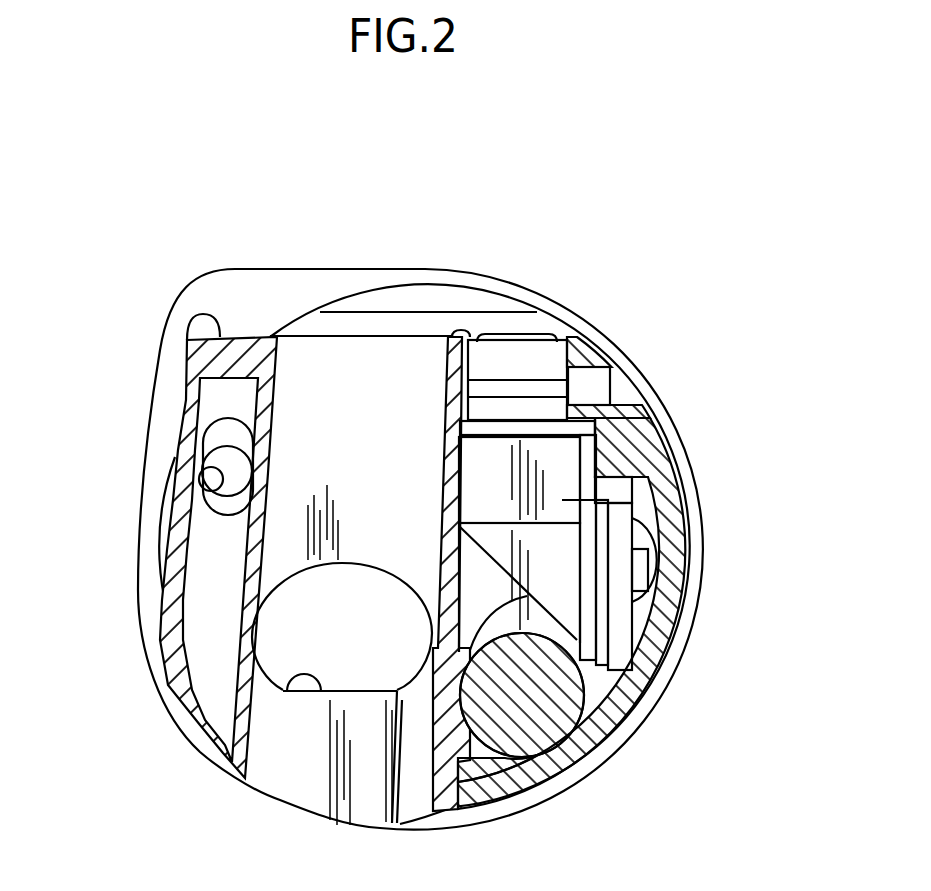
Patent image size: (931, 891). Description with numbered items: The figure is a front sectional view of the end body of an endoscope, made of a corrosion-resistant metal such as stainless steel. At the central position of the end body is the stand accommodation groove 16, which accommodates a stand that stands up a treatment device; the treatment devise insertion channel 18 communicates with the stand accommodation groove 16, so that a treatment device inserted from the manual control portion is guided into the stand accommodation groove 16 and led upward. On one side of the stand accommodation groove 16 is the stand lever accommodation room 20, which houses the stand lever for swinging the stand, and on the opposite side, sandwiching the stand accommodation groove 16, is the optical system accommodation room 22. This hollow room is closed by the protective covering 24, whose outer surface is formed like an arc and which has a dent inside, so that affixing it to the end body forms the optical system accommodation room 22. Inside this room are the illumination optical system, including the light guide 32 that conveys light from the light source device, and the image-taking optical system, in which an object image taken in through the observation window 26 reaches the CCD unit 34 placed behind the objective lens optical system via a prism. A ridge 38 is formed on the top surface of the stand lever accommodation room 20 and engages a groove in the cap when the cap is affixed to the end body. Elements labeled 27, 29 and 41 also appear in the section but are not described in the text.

The stand accommodation groove 16 is at (345, 372).
The treatment devise insertion channel 18 is at (283, 691).
The stand lever accommodation room 20 is at (205, 636).
The optical system accommodation room 22 is at (646, 494).
The protective covering 24 is at (680, 532).
The observation window 26 is at (537, 334).
The seal member 27 is at (552, 364).
The piston body 29 is at (565, 623).
The light guide 32 is at (533, 727).
The CCD unit 34 is at (613, 609).
The ridge 38 is at (190, 325).
The pin 41 is at (212, 468).